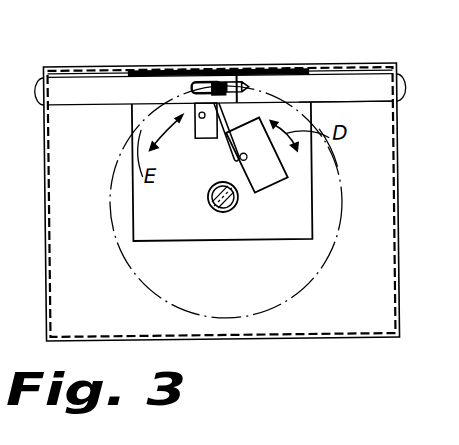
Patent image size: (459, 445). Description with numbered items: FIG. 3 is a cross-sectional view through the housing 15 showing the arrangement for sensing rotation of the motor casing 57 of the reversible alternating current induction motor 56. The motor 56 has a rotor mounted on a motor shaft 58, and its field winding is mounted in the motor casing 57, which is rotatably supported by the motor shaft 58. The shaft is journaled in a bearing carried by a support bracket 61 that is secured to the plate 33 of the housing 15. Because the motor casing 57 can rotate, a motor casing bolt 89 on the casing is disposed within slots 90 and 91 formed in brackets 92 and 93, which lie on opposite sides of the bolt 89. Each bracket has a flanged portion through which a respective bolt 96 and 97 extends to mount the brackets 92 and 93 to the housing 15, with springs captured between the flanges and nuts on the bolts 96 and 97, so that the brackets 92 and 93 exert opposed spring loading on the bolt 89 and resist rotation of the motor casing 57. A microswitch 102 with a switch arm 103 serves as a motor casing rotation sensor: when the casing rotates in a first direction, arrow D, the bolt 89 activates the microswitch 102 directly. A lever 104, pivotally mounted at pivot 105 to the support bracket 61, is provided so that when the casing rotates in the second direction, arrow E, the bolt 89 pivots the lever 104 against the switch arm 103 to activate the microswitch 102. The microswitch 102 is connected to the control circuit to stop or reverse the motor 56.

The housing 15 is at (338, 343).
The plate 33 is at (347, 66).
The alternating current induction motor 56 is at (299, 289).
The motor casing 57 is at (336, 237).
The motor shaft 58 is at (212, 214).
The support bracket 61 is at (250, 244).
The motor casing bolt 89 is at (223, 84).
The slot 90 is at (205, 84).
The slot 91 is at (243, 85).
The bracket 92 is at (75, 97).
The bracket 93 is at (370, 99).
The bolt 96 is at (36, 96).
The bolt 97 is at (404, 92).
The microswitch 102 is at (270, 180).
The switch arm 103 is at (228, 119).
The lever 104 is at (207, 142).
The pivot 105 is at (197, 135).